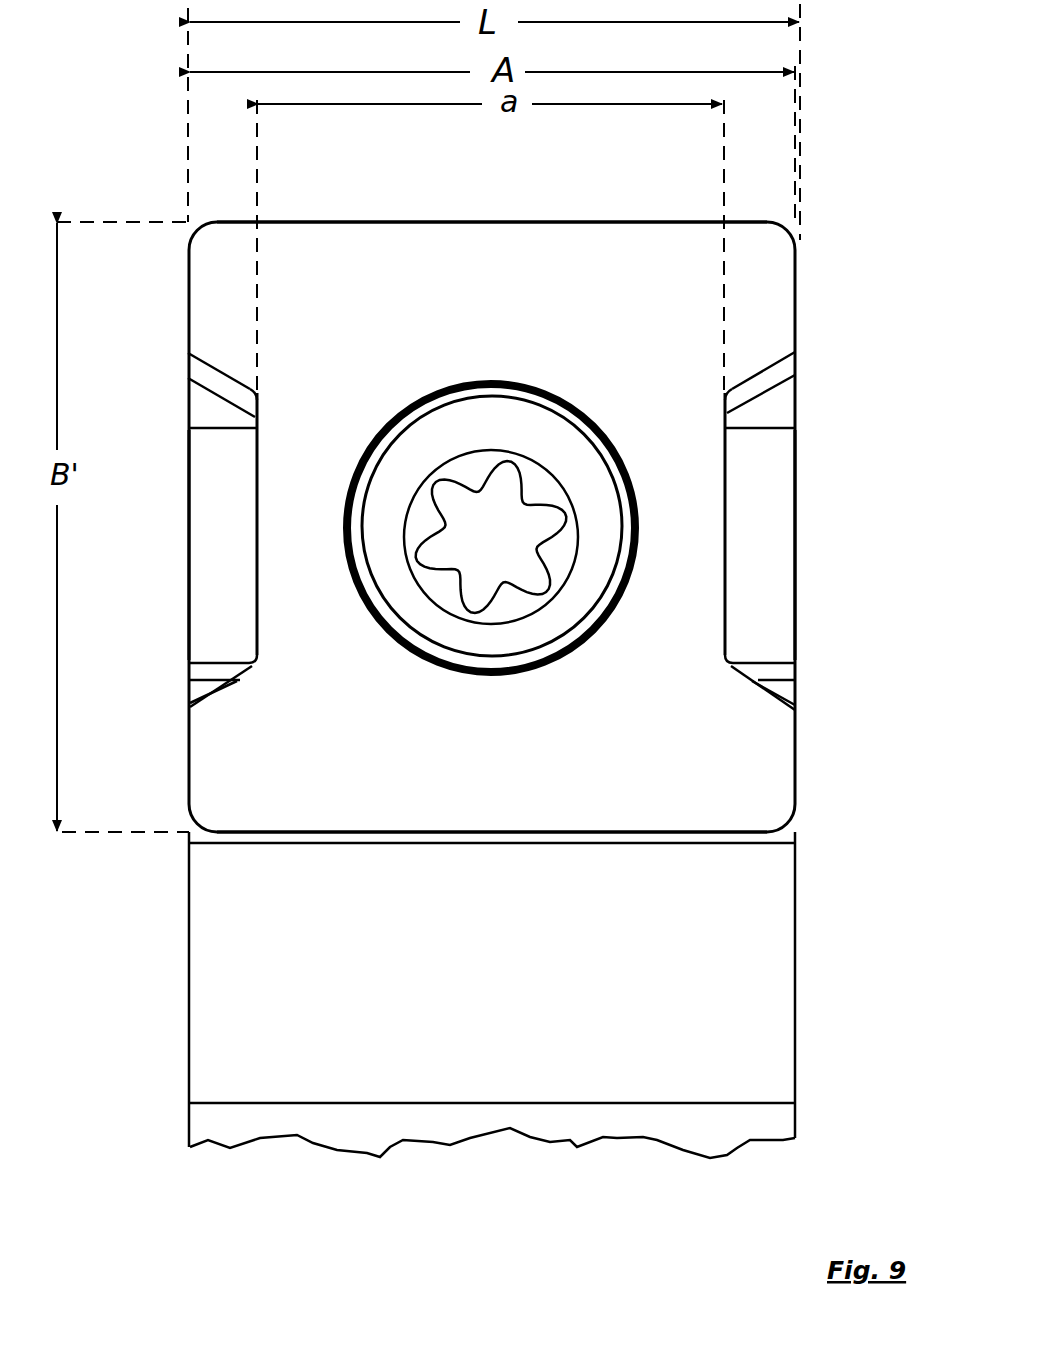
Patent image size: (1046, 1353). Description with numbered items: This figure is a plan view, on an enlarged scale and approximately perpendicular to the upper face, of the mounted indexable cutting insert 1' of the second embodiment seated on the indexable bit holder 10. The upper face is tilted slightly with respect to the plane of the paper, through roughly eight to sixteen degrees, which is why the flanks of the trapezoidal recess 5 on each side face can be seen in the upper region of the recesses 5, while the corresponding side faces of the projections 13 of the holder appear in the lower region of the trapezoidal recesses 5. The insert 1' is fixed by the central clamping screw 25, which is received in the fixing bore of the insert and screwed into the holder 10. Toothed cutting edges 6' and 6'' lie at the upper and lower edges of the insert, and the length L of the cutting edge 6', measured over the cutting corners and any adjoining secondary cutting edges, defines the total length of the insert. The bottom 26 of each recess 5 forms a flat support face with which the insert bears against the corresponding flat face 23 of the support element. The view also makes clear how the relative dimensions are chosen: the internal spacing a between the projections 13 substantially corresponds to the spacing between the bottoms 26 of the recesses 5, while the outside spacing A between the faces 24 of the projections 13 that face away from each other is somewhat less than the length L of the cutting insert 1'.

The cutting insert 1' is at (427, 496).
The cutting edge 6' is at (492, 188).
The cutting edge 6'' is at (439, 874).
The recess 5 is at (775, 411).
The projection 13 is at (776, 548).
The face 24 is at (802, 610).
The flat face 23 is at (718, 627).
The screw 25 is at (478, 540).
The bottom of the recess 26 is at (245, 429).
The indexable bit holder 10 is at (802, 906).